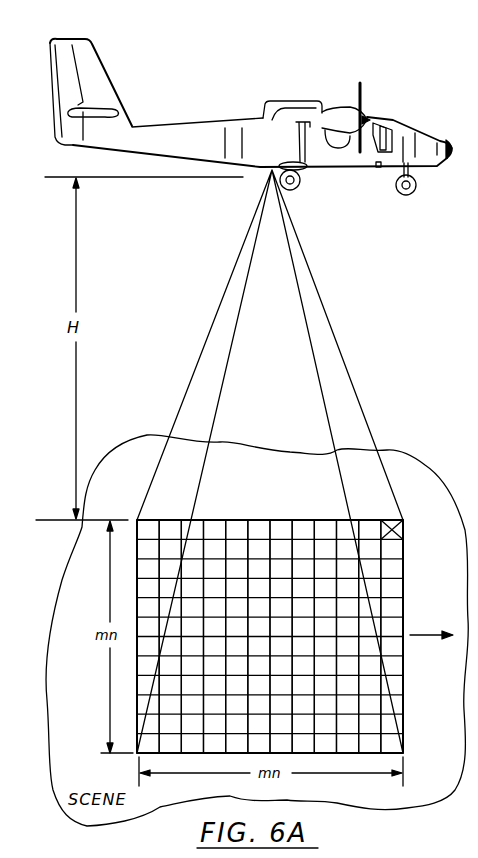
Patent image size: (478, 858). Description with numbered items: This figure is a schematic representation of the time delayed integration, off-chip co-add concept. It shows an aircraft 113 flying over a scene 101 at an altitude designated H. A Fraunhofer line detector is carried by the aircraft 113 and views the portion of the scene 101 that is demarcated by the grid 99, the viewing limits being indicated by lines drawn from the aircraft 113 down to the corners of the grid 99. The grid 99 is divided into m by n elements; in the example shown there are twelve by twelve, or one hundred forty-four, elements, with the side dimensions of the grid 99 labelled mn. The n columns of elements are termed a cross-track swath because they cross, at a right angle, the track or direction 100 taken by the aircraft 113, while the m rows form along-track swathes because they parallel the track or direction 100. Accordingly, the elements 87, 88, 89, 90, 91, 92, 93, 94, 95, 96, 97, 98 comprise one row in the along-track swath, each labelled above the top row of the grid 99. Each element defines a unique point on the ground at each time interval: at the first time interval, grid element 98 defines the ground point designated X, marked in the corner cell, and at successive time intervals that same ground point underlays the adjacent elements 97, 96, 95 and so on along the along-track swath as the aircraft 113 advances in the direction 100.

The grid element 87 is at (148, 509).
The grid element 88 is at (170, 509).
The grid element 89 is at (192, 509).
The grid element 90 is at (226, 486).
The grid element 91 is at (237, 509).
The grid element 92 is at (270, 486).
The grid element 93 is at (281, 509).
The grid element 94 is at (315, 486).
The grid element 95 is at (325, 509).
The grid element 96 is at (365, 486).
The grid element 97 is at (370, 509).
The grid element 98 is at (411, 486).
The grid 99 is at (316, 457).
The track or direction 100 is at (427, 624).
The scene 101 is at (43, 600).
The aircraft 113 is at (414, 114).